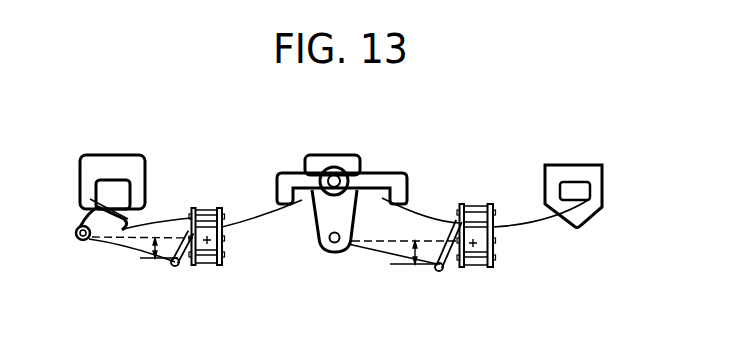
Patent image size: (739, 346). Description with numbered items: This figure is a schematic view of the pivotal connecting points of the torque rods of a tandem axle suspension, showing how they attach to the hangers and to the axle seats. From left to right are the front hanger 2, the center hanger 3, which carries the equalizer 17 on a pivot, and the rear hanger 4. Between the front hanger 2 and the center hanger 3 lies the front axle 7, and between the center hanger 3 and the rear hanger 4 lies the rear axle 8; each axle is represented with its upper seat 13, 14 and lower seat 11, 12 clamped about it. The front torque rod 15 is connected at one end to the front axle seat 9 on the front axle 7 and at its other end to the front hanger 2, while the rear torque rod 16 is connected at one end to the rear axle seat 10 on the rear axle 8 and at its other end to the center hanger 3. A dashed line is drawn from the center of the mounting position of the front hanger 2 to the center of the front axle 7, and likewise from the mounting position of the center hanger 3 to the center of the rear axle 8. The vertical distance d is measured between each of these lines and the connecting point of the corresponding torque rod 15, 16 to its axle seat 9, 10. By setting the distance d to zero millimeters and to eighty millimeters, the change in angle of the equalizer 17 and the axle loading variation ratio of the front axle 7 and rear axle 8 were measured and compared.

The front hanger 2 is at (132, 169).
The center hanger 3 is at (335, 158).
The rear hanger 4 is at (573, 165).
The front axle 7 is at (224, 241).
The rear axle 8 is at (495, 243).
The front axle seat 9 is at (181, 266).
The rear axle seat 10 is at (447, 272).
The lower seat 11 is at (207, 264).
The lower seat 12 is at (480, 268).
The upper seat 13 is at (207, 211).
The upper seat 14 is at (477, 211).
The torque rod 15 is at (108, 243).
The torque rod 16 is at (356, 247).
The equalizer 17 is at (383, 178).
The vertical distance d is at (145, 258).